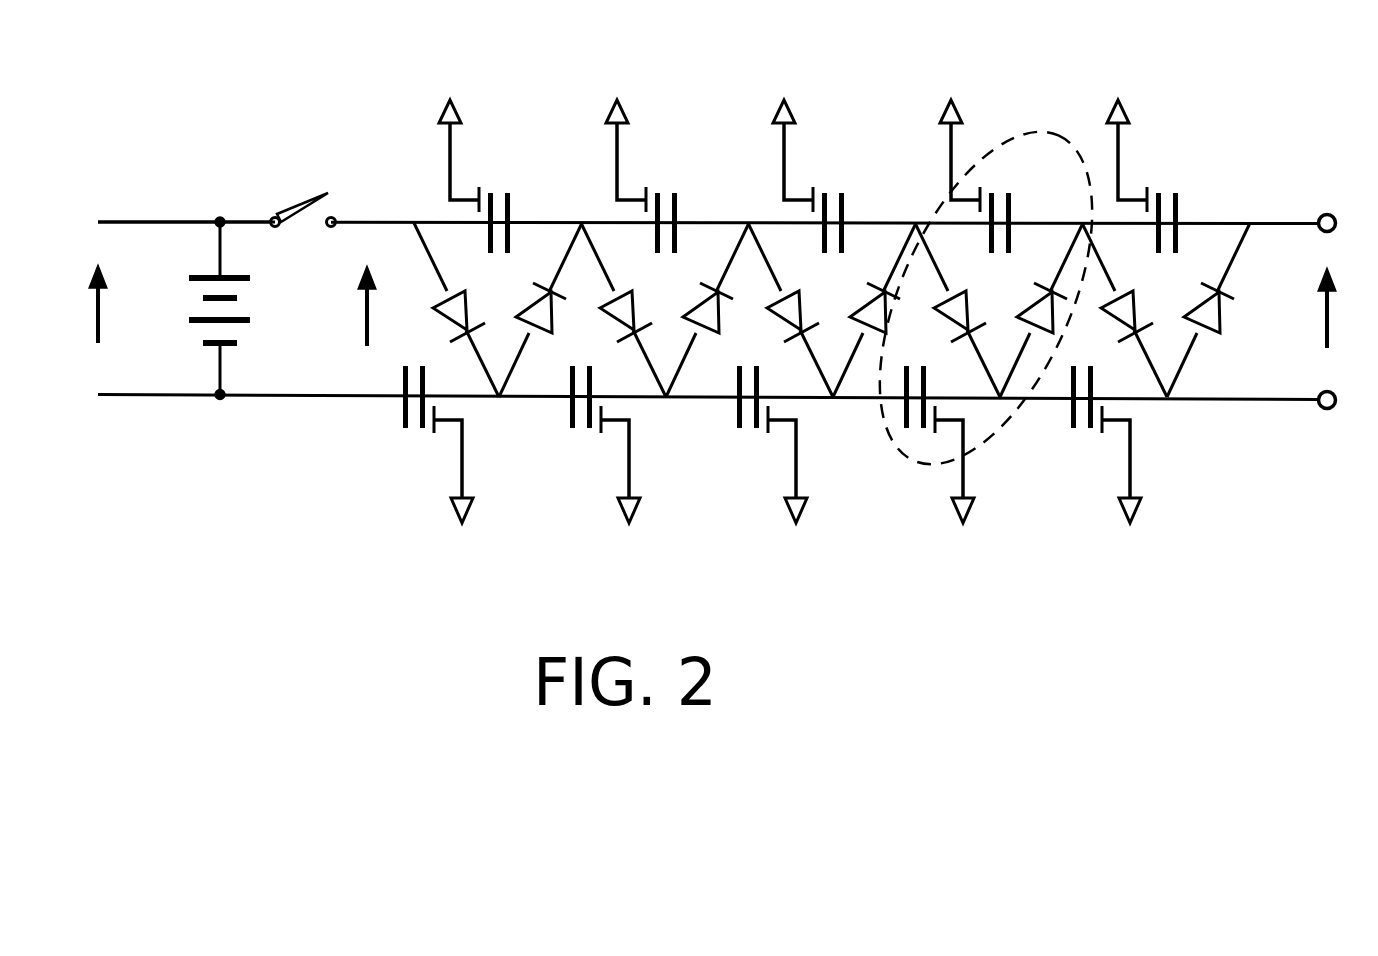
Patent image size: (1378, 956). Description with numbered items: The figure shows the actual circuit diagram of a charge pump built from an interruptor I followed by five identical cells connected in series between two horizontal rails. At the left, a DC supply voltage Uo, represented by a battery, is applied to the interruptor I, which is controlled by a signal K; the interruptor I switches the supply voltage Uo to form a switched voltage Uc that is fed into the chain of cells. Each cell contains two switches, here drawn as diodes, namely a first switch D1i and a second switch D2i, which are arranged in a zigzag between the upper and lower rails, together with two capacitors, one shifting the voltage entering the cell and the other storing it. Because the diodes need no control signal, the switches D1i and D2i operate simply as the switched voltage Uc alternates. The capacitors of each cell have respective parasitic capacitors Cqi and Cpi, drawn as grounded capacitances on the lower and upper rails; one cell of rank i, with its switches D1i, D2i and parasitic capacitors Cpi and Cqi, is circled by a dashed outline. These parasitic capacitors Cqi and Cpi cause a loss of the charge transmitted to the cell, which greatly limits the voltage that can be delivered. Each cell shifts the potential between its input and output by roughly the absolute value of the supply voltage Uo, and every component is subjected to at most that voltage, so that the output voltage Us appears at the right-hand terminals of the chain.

The signal K is at (300, 178).
The interruptor I is at (288, 202).
The DC supply voltage Uo is at (80, 304).
The switched voltage Uc is at (347, 306).
The output voltage Us is at (1345, 308).
The parasitic capacitor Cpi is at (985, 196).
The parasitic capacitor Cqi is at (930, 435).
The switch D1i is at (948, 294).
The switch D2i is at (1063, 293).